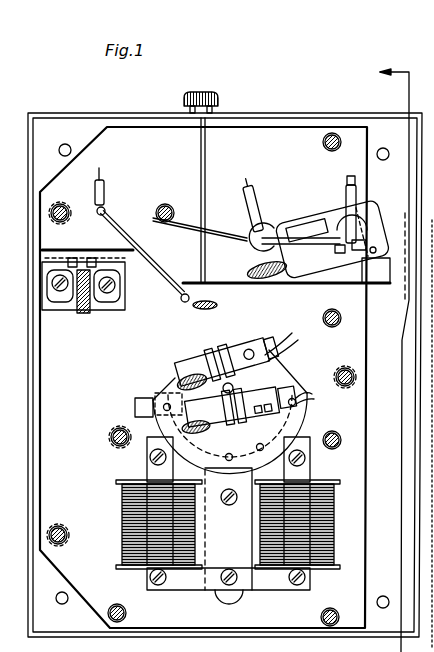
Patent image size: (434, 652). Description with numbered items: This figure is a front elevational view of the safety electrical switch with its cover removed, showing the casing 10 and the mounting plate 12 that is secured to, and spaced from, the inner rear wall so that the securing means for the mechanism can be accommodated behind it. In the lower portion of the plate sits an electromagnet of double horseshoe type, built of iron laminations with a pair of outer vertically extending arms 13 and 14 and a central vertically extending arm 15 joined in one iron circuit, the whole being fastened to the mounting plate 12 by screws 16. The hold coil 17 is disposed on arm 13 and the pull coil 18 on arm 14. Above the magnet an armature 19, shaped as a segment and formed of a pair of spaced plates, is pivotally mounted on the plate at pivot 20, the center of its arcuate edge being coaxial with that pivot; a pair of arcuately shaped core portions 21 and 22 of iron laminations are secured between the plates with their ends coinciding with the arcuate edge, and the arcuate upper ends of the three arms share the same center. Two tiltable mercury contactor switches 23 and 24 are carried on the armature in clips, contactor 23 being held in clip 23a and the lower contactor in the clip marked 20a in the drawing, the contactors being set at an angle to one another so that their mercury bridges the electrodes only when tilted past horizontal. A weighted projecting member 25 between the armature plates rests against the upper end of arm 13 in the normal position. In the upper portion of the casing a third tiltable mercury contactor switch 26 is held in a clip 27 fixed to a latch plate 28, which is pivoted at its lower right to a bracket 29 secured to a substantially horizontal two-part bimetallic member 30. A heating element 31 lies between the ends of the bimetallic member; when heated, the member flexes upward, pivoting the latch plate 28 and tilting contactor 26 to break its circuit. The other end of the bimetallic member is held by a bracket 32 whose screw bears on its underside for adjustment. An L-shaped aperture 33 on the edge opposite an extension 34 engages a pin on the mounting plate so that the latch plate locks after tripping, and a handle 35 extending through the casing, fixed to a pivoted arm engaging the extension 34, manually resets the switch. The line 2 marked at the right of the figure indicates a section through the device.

The section line 2 is at (407, 359).
The casing 10 is at (363, 115).
The mounting plate 12 is at (277, 143).
The outer vertically extending arm 13 is at (153, 440).
The outer vertically extending arm 14 is at (306, 438).
The central vertically extending arm 15 is at (228, 520).
The screws 16 is at (167, 578).
The hold coil 17 is at (125, 498).
The pull coil 18 is at (323, 498).
The armature 19 is at (171, 378).
The pivot 20 is at (226, 393).
The contact 20a is at (240, 401).
The arcuately shaped core portion 21 is at (173, 463).
The arcuately shaped core portion 22 is at (263, 477).
The tiltable mercury contactor switch 23 is at (258, 343).
The clip 23a is at (215, 350).
The tiltable mercury contactor switch 24 is at (278, 386).
The weighted projecting member 25 is at (142, 398).
The tiltable mercury contactor switch 26 is at (245, 257).
The clip 27 is at (302, 232).
The latch plate 28 is at (372, 210).
The bracket 29 is at (380, 273).
The two-part bimetallic member 30 is at (100, 247).
The heating element 31 is at (105, 215).
The bracket 32 is at (113, 268).
The L-shaped aperture 33 is at (338, 221).
The extension 34 is at (272, 228).
The handle 35 is at (222, 107).